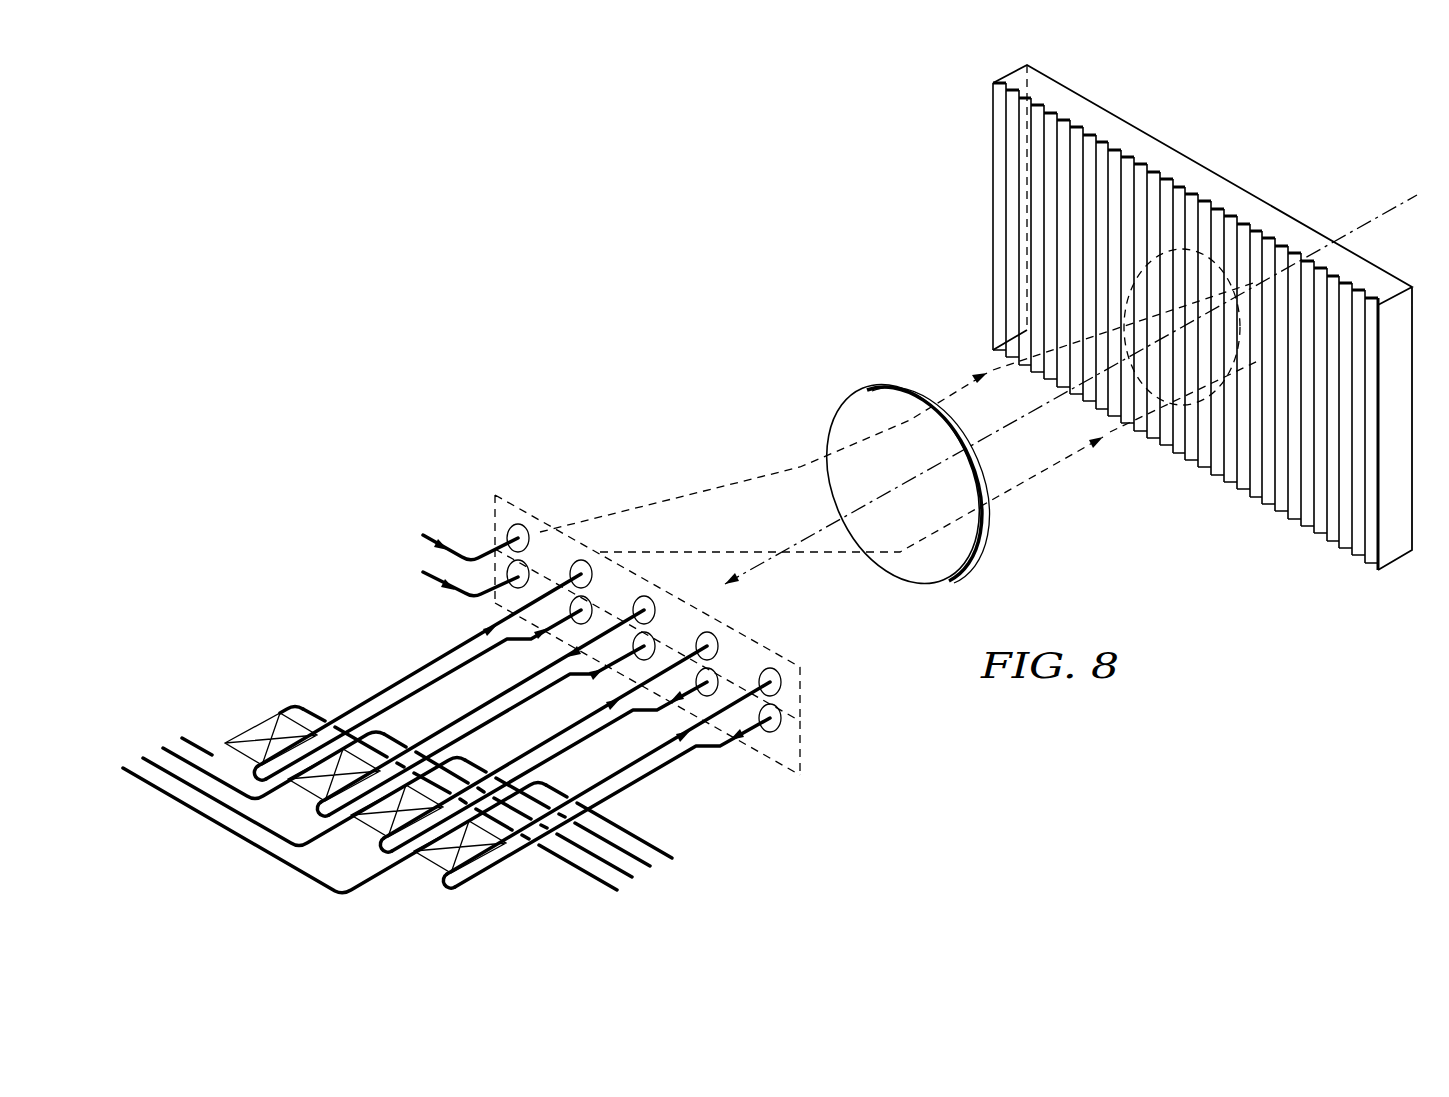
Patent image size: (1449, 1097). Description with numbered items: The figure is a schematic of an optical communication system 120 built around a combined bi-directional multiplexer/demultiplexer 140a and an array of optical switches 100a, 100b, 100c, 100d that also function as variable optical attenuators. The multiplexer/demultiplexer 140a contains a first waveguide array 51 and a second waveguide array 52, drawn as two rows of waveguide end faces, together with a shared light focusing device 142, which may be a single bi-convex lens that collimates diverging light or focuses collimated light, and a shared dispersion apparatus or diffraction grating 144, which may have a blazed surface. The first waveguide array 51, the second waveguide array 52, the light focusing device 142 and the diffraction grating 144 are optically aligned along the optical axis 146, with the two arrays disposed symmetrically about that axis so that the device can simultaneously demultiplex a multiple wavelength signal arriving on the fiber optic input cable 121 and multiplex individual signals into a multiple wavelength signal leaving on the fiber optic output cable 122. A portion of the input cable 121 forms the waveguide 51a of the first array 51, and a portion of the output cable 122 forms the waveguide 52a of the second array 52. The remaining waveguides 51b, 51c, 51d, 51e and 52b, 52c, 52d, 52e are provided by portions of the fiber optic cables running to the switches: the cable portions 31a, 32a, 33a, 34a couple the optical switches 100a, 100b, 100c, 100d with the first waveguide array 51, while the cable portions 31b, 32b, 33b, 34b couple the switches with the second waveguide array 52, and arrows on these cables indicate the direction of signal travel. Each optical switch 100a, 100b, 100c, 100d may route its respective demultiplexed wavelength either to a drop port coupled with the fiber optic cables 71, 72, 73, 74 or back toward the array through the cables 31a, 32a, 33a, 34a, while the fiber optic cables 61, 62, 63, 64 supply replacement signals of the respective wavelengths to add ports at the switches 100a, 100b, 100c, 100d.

The communication system 120 is at (302, 556).
The fiber optic input cable 121 is at (432, 534).
The fiber optic output cable 122 is at (425, 570).
The combined multiplexer/demultiplexer 140a is at (730, 325).
The light focusing device 142 is at (875, 385).
The diffraction grating 144 is at (1218, 178).
The optical axis 146 is at (1398, 210).
The first waveguide array 51 is at (803, 690).
The second waveguide array 52 is at (803, 730).
The waveguide 51a is at (525, 524).
The waveguide 51b is at (588, 558).
The waveguide 51c is at (655, 594).
The waveguide 51d is at (718, 630).
The waveguide 51e is at (777, 665).
The waveguide 52a is at (530, 562).
The waveguide 52b is at (595, 600).
The waveguide 52c is at (655, 636).
The waveguide 52d is at (715, 697).
The waveguide 52e is at (772, 735).
The fiber optic cable or waveguide 31a is at (395, 700).
The fiber optic cable or waveguide 31b is at (372, 740).
The fiber optic cable or waveguide 32a is at (465, 640).
The fiber optic cable or waveguide 32b is at (450, 669).
The fiber optic cable or waveguide 33a is at (625, 705).
The fiber optic cable or waveguide 33b is at (530, 690).
The fiber optic cable or waveguide 34a is at (668, 740).
The fiber optic cable or waveguide 34b is at (648, 785).
The fiber optic cable 61 is at (190, 732).
The fiber optic cable 62 is at (158, 742).
The fiber optic cable 63 is at (145, 752).
The fiber optic cable 64 is at (130, 780).
The fiber optic cable 71 is at (605, 888).
The fiber optic cable 72 is at (637, 880).
The fiber optic cable 73 is at (660, 865).
The fiber optic cable 74 is at (683, 853).
The optical switch 100a is at (235, 725).
The optical switch 100b is at (290, 810).
The optical switch 100c is at (345, 850).
The optical switch 100d is at (482, 863).